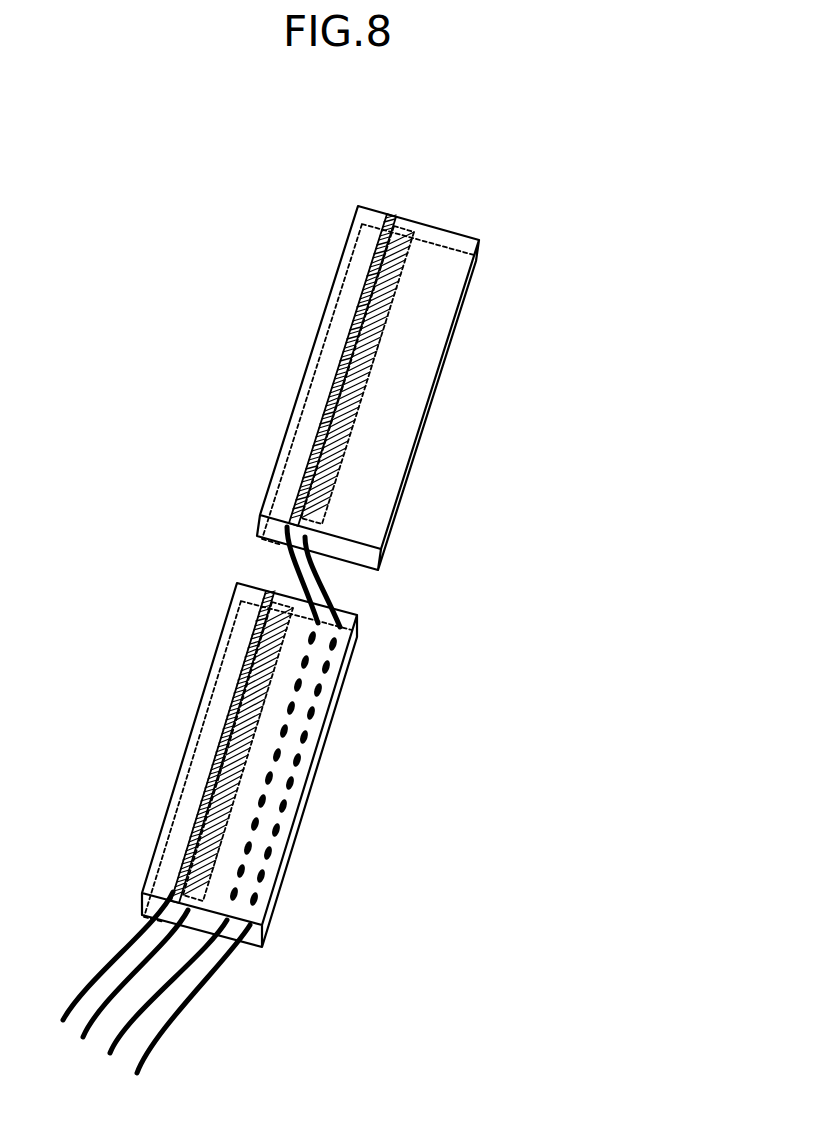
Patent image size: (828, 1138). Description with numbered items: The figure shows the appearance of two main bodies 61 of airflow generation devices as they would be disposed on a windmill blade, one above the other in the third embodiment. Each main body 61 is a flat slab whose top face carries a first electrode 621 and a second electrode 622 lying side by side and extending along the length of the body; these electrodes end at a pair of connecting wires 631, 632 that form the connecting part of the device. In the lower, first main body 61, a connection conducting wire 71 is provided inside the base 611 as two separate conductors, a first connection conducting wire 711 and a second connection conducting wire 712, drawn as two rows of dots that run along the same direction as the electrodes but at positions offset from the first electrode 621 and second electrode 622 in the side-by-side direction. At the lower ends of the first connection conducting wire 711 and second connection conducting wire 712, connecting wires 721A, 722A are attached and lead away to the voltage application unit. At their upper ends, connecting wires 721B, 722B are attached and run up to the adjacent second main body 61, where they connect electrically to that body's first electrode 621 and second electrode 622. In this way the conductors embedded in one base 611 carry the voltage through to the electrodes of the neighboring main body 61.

The main body 61 is at (258, 377).
The base 611 is at (353, 238).
The first electrode 621 is at (365, 288).
The second electrode 622 is at (368, 327).
The connecting wire 631 is at (300, 546).
The connecting wire 632 is at (285, 525).
The connection conducting wire 71 is at (338, 768).
The first connection conducting wire 711 is at (285, 760).
The second connection conducting wire 712 is at (290, 790).
The connecting wire 721A is at (187, 977).
The connecting wire 722A is at (190, 1003).
The connecting wire 721B is at (310, 588).
The connecting wire 722B is at (328, 602).